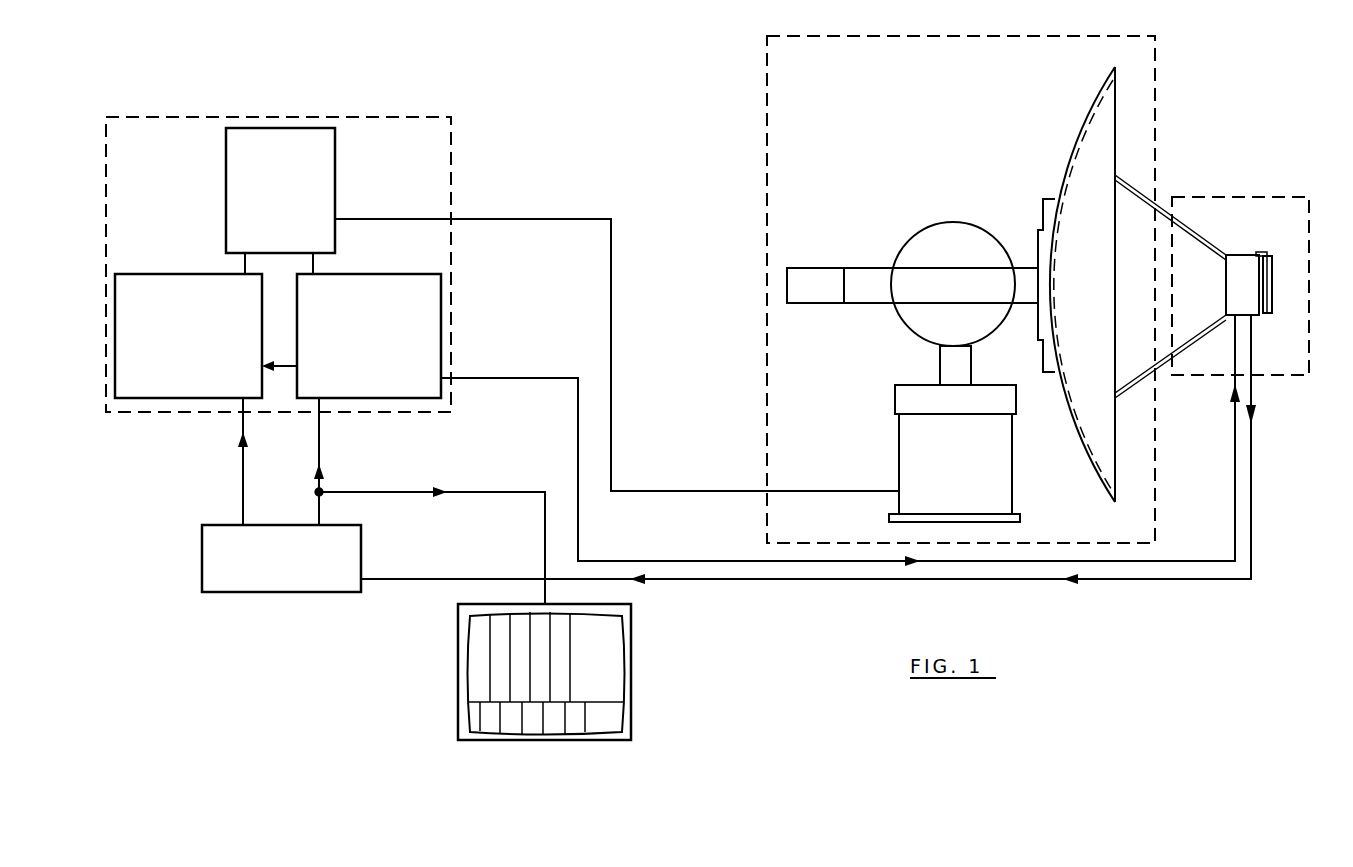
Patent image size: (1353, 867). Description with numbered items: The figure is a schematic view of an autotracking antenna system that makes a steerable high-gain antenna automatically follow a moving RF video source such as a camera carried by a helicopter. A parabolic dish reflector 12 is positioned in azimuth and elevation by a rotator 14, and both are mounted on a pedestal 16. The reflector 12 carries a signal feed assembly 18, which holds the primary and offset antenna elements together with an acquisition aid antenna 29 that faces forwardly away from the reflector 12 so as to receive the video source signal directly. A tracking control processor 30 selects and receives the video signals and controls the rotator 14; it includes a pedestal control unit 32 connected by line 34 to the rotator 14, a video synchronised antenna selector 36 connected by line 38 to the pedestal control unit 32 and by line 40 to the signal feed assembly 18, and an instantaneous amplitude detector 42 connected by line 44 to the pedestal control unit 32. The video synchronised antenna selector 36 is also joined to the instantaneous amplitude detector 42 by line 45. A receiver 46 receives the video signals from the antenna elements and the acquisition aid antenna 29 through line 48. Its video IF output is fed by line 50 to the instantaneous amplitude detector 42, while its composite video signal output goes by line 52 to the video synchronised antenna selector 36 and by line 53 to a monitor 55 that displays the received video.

The parabolic dish reflector 12 is at (1076, 136).
The rotator 14 is at (864, 385).
The pedestal 16 is at (760, 130).
The signal feed assembly 18 is at (1315, 220).
The acquisition aid antenna 29 is at (1296, 165).
The tracking control processor 30 is at (462, 139).
The pedestal control unit 32 is at (335, 168).
The line 34 is at (719, 490).
The video synchronised antenna selector 36 is at (418, 272).
The line 38 is at (313, 266).
The line 40 is at (719, 560).
The instantaneous amplitude detector 42 is at (134, 272).
The line 44 is at (245, 266).
The line 45 is at (282, 362).
The receiver 46 is at (292, 594).
The line 48 is at (693, 582).
The line 50 is at (245, 470).
The line 52 is at (318, 441).
The line 53 is at (507, 490).
The monitor 55 is at (457, 662).